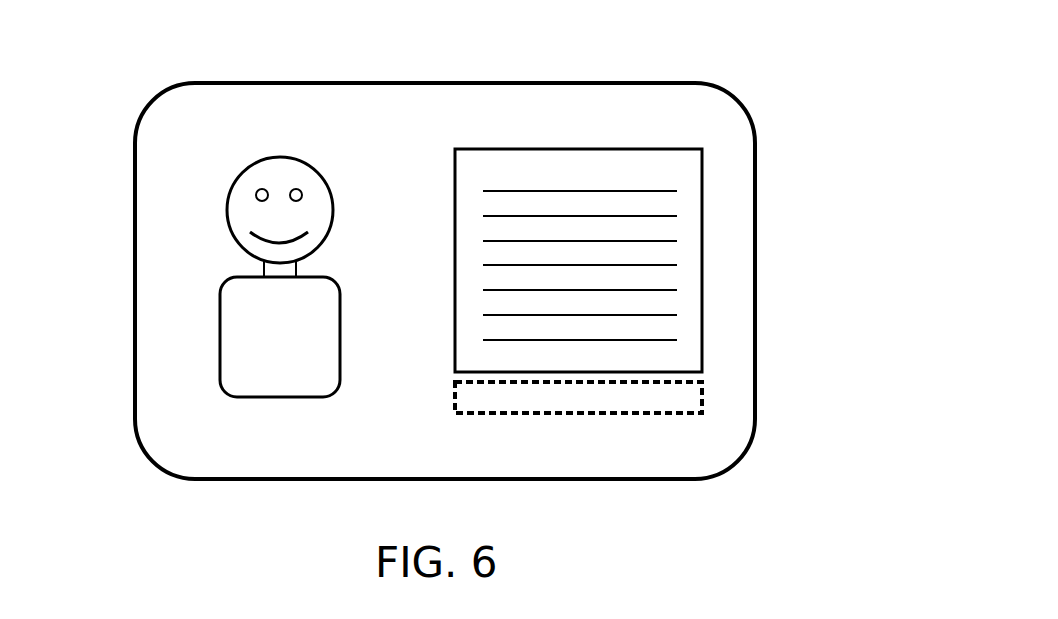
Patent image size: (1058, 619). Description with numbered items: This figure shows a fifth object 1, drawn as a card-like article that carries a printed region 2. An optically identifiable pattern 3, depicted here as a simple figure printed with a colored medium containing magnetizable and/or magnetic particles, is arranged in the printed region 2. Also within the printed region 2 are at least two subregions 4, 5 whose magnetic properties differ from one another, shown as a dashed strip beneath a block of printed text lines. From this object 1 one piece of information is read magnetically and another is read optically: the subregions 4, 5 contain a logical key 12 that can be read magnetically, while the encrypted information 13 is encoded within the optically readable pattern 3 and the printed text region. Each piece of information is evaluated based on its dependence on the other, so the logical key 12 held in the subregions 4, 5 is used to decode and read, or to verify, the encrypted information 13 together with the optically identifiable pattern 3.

The object 1 is at (641, 83).
The printed region 2 is at (726, 126).
The optically identifiable pattern 3 is at (240, 215).
The encrypted information 13 is at (670, 280).
The subregion 4 is at (688, 387).
The subregion 5 is at (688, 402).
The logical key 12 is at (609, 405).